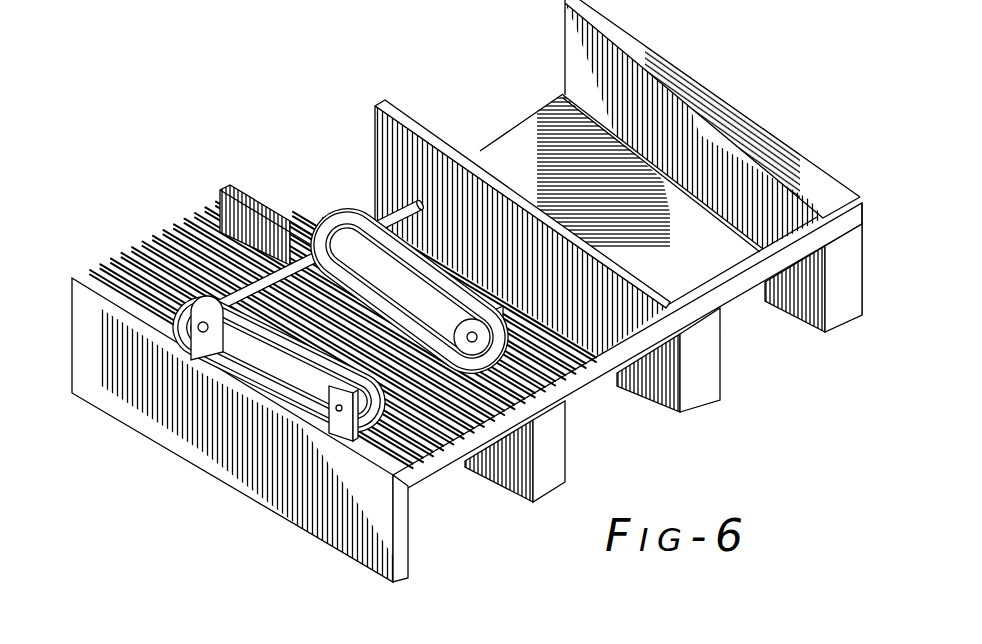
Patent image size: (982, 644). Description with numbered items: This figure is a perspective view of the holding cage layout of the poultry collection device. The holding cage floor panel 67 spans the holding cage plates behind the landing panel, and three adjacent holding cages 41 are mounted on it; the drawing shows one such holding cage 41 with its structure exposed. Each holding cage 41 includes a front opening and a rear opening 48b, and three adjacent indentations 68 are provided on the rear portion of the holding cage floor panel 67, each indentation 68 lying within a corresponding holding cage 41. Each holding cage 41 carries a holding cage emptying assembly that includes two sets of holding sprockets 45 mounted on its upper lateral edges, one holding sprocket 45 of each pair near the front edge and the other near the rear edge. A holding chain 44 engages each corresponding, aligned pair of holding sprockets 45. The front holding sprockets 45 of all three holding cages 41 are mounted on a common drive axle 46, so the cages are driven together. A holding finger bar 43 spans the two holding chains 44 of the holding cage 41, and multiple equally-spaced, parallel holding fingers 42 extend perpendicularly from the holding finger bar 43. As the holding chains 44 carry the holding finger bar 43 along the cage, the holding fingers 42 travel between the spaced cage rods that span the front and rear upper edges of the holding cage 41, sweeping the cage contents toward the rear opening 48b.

The holding cage 41 is at (95, 385).
The holding fingers 42 is at (200, 214).
The holding finger bar 43 is at (277, 222).
The holding chain 44 is at (293, 392).
The holding sprockets 45 is at (350, 212).
The drive axle 46 is at (334, 238).
The rear opening 48b is at (469, 504).
The holding cage floor panel 67 is at (607, 181).
The indentations 68 is at (429, 486).